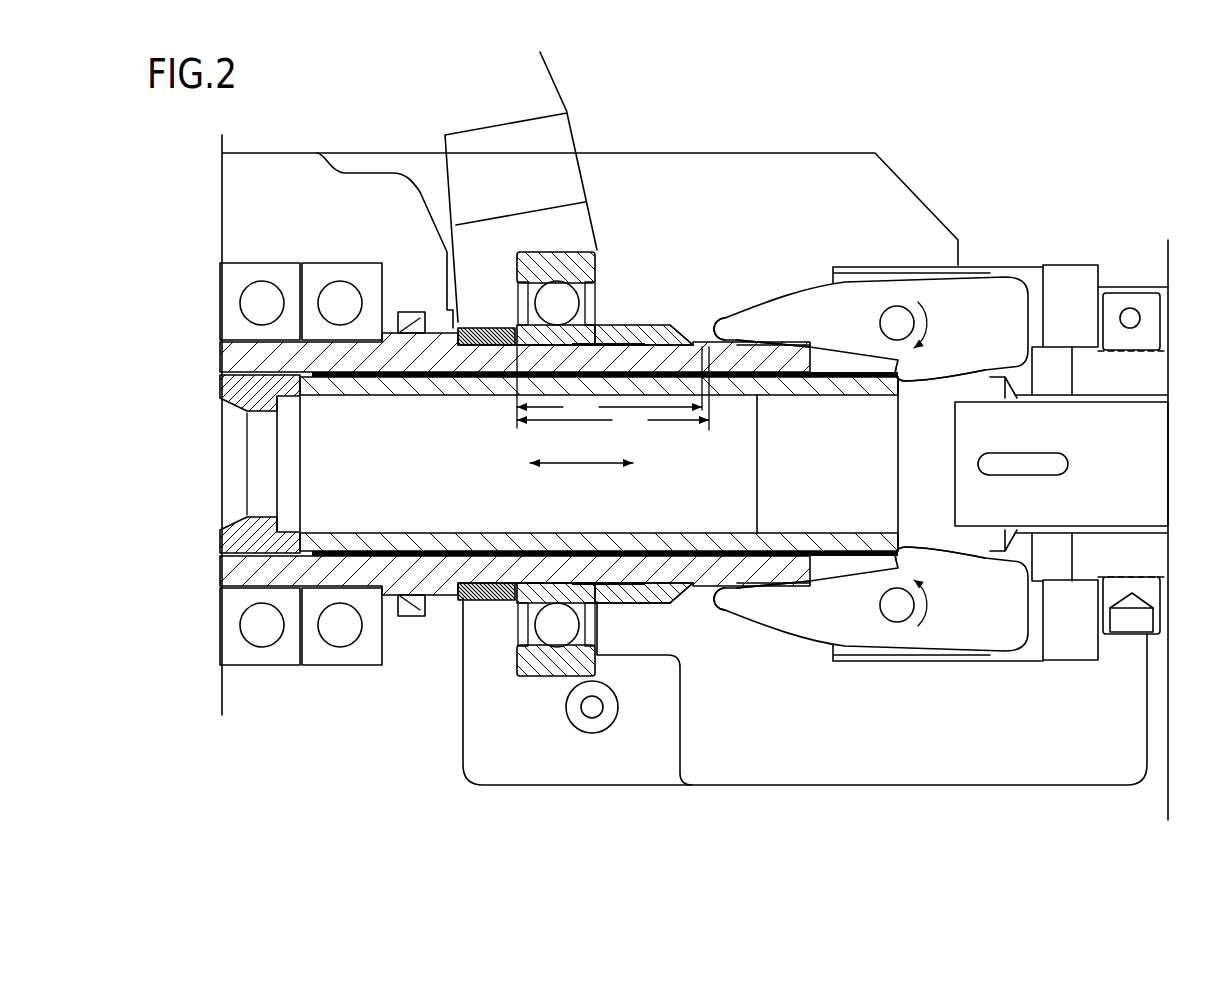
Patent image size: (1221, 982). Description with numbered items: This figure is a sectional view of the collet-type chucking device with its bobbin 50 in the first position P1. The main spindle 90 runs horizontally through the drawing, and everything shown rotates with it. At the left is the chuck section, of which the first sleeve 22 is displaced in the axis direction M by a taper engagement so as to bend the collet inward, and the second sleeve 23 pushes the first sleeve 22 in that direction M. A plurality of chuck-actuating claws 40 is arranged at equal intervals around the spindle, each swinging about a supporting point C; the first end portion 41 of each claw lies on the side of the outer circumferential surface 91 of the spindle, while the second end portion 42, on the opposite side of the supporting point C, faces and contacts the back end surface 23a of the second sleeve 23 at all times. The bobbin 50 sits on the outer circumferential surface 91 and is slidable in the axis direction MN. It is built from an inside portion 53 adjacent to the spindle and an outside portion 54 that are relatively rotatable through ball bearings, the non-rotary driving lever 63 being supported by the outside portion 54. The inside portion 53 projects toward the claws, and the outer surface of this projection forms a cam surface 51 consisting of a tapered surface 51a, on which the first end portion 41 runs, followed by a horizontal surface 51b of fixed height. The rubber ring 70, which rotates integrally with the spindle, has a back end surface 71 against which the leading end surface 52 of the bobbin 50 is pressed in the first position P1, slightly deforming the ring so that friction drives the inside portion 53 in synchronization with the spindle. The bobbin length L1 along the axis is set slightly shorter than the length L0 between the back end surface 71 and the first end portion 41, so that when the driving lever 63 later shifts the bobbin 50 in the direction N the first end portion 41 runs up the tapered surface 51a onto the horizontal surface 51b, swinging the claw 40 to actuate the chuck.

The first sleeve 22 is at (262, 542).
The second sleeve 23 is at (397, 537).
The back end surface 23a is at (900, 537).
The chuck-actuating claw 40 is at (1005, 638).
The first end portion 41 is at (737, 613).
The second end portion 42 is at (933, 560).
The bobbin 50 is at (640, 325).
The cam surface 51 is at (720, 333).
The tapered surface 51a is at (700, 587).
The horizontal surface 51b is at (638, 602).
The leading end surface 52 is at (503, 327).
The inside portion 53 is at (620, 600).
The outside portion 54 is at (537, 673).
The driving lever 63 is at (528, 84).
The rubber ring 70 is at (485, 592).
The back end surface 71 is at (518, 342).
The main spindle 90 is at (413, 340).
The outer circumferential surface 91 is at (757, 350).
The supporting point C is at (895, 607).
The first position P1 is at (515, 400).
The length L0 is at (613, 389).
The length L1 is at (609, 382).
The axis direction M is at (571, 462).
The axis direction N is at (639, 462).